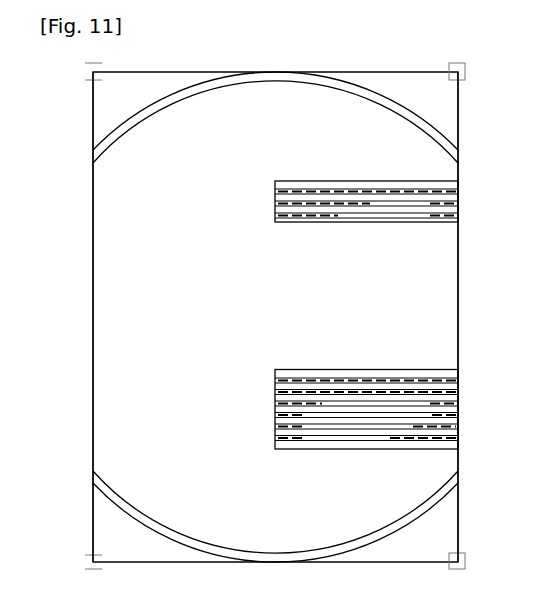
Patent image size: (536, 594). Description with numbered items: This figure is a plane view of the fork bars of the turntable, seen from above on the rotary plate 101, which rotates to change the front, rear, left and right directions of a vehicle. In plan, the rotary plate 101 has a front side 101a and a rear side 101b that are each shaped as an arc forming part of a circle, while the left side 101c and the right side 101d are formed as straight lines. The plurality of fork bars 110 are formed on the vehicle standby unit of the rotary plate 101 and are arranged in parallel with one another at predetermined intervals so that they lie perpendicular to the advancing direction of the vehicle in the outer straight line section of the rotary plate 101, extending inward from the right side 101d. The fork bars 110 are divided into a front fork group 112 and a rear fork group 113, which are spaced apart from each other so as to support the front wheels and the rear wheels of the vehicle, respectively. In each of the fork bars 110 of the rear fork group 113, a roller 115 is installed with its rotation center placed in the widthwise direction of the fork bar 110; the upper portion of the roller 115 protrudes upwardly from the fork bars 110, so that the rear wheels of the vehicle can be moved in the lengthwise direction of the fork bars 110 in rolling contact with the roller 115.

The rotary plate 101 is at (117, 209).
The front side 101a is at (180, 104).
The rear side 101b is at (194, 538).
The left side 101c is at (95, 352).
The right side 101d is at (456, 312).
The fork bars 110 is at (319, 315).
The front fork group 112 is at (265, 183).
The rear fork group 113 is at (265, 370).
The roller 115 is at (367, 315).